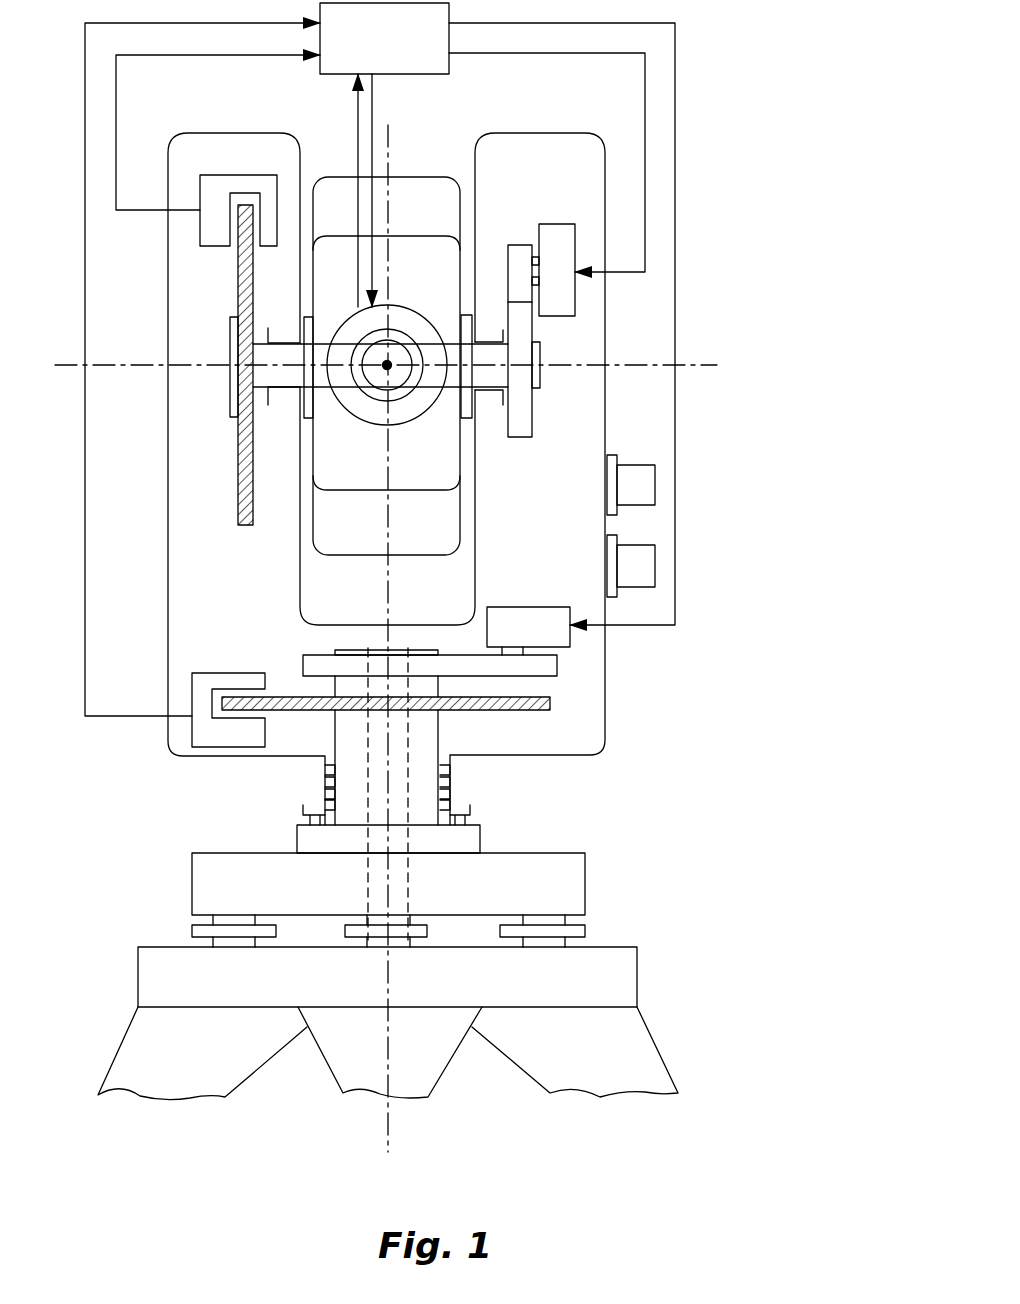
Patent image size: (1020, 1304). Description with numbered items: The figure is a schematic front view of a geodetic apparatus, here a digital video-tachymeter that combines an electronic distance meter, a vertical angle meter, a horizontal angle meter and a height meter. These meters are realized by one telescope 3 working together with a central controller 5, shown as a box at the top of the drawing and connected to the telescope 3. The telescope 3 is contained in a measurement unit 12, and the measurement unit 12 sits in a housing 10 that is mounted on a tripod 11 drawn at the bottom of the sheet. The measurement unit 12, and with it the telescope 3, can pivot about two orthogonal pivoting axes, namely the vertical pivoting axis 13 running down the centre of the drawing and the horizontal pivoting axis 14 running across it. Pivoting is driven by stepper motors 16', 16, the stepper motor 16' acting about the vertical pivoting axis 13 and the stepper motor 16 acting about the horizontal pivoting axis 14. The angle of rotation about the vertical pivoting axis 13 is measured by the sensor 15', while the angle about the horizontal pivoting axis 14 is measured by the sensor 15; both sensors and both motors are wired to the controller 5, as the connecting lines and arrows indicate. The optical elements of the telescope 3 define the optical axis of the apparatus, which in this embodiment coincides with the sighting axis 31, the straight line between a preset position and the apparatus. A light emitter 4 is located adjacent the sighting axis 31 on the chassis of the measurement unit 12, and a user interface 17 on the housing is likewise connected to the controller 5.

The telescope 3 is at (367, 387).
The sighting axis 31 is at (389, 367).
The light emitter 4 is at (405, 330).
The central controller 5 is at (378, 54).
The upper part housing 10 is at (585, 733).
The tripod 11 is at (643, 1060).
The measurement unit 12 is at (413, 183).
The vertical pivoting axis 13 is at (388, 1118).
The horizontal pivoting axis 14 is at (683, 365).
The sensor 15 is at (195, 350).
The sensor 15' is at (346, 738).
The stepper motor 16 is at (548, 297).
The stepper motor 16' is at (530, 604).
The user interface 17 is at (653, 495).